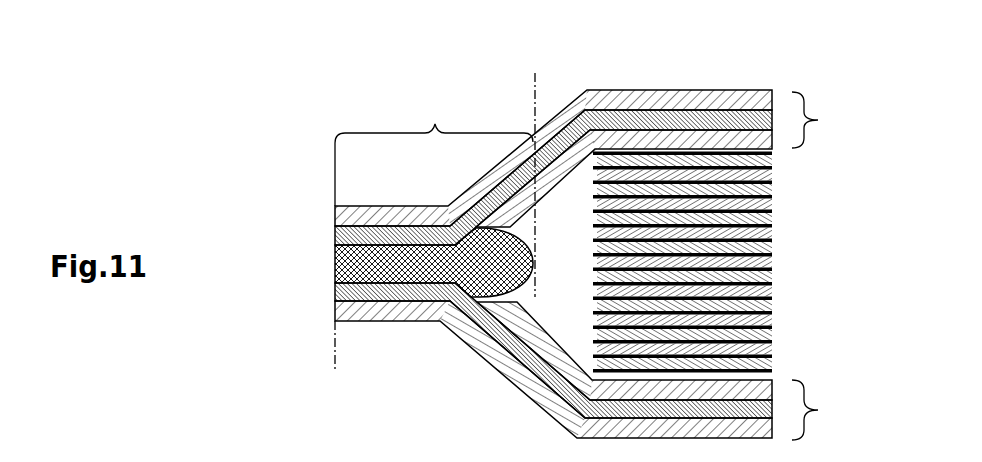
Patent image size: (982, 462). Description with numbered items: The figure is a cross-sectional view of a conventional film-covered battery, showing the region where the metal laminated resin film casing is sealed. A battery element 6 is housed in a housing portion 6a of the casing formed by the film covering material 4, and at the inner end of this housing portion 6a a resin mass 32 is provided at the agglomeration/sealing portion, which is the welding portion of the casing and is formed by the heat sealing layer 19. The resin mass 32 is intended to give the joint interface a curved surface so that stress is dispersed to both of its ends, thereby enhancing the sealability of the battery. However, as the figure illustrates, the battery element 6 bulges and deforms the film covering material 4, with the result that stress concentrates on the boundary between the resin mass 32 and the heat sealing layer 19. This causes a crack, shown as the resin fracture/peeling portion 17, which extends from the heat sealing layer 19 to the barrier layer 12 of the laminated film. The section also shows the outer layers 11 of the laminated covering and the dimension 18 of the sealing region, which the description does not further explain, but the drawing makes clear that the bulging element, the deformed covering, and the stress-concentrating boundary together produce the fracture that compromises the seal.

The film covering material 4 is at (816, 266).
The battery element 6 is at (797, 252).
The housing portion 6a is at (568, 206).
The outer cladding layer 11 is at (335, 214).
The barrier layer 12 is at (335, 236).
The resin fracture/peeling portion 17 is at (467, 198).
The transition region 18 is at (435, 221).
The heat sealing layer 19 is at (335, 270).
The resin mass 32 is at (420, 322).